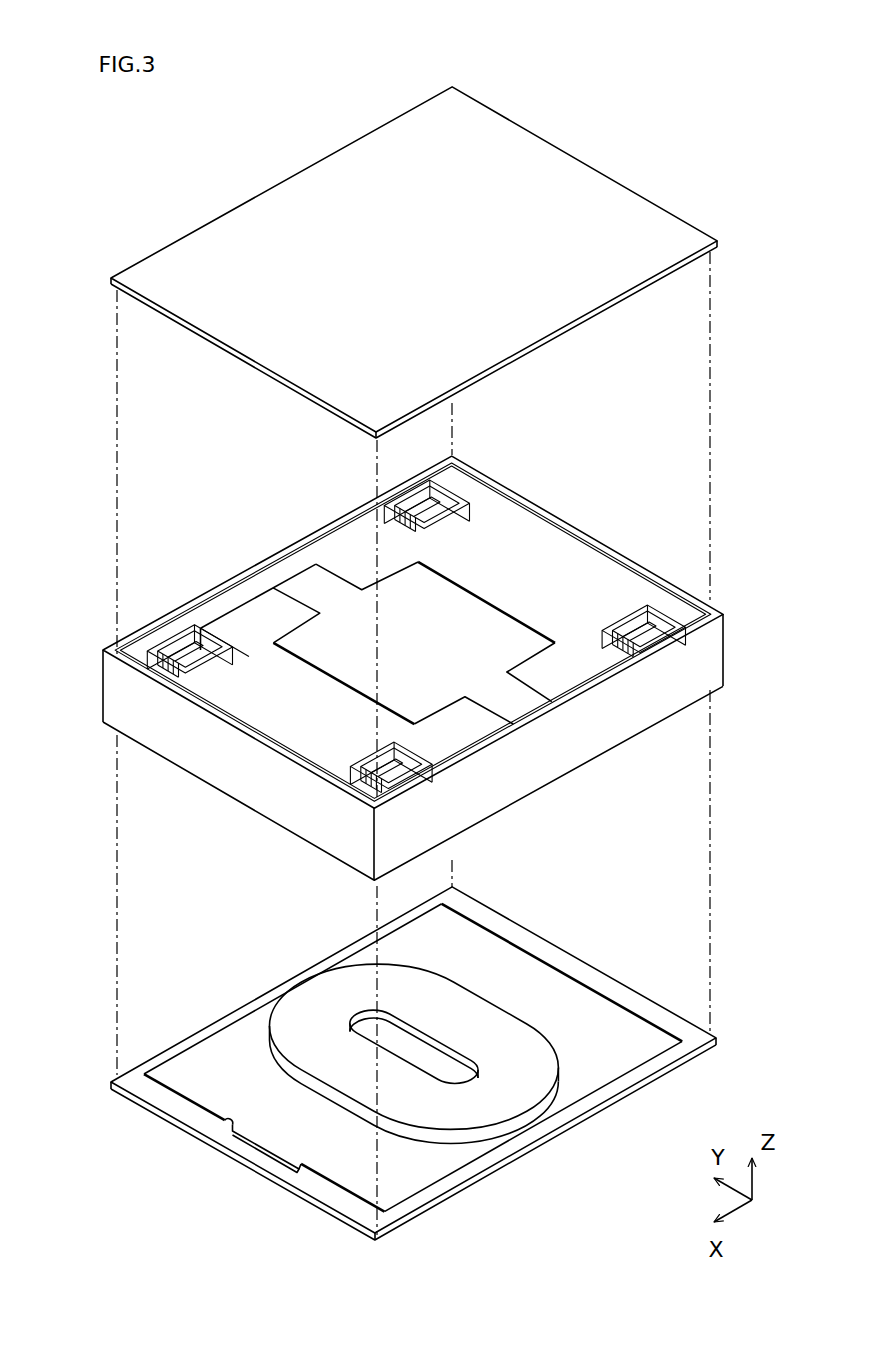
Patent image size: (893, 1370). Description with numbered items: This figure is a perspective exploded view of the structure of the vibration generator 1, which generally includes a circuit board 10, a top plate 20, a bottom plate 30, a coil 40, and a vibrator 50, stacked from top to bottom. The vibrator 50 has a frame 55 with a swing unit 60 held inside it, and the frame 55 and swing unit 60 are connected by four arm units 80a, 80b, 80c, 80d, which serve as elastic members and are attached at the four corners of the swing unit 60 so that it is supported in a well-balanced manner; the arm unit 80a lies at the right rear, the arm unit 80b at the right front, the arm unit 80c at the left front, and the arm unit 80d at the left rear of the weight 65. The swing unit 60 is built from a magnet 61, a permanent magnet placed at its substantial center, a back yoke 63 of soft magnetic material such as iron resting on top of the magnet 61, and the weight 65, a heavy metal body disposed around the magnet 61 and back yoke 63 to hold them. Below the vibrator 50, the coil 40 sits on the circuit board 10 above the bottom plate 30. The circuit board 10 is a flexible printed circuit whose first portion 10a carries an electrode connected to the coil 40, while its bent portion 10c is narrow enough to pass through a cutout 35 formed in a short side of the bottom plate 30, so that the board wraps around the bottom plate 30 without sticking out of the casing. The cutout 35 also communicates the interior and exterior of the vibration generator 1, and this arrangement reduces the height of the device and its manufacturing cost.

The vibration generator 1 is at (23, 109).
The circuit board 10 is at (208, 1082).
The first portion 10a is at (293, 989).
The bent portion 10c is at (265, 1176).
The top plate 20 is at (203, 268).
The bottom plate 30 is at (608, 1115).
The cutout 35 is at (200, 1134).
The coil 40 is at (540, 1058).
The vibrator 50 is at (268, 536).
The frame 55 is at (605, 590).
The swing unit 60 is at (225, 621).
The magnet 61 is at (367, 521).
The back yoke 63 is at (365, 620).
The weight 65 is at (535, 585).
The arm unit 80a is at (370, 754).
The arm unit 80b is at (167, 643).
The arm unit 80c is at (466, 504).
The arm unit 80d is at (650, 628).